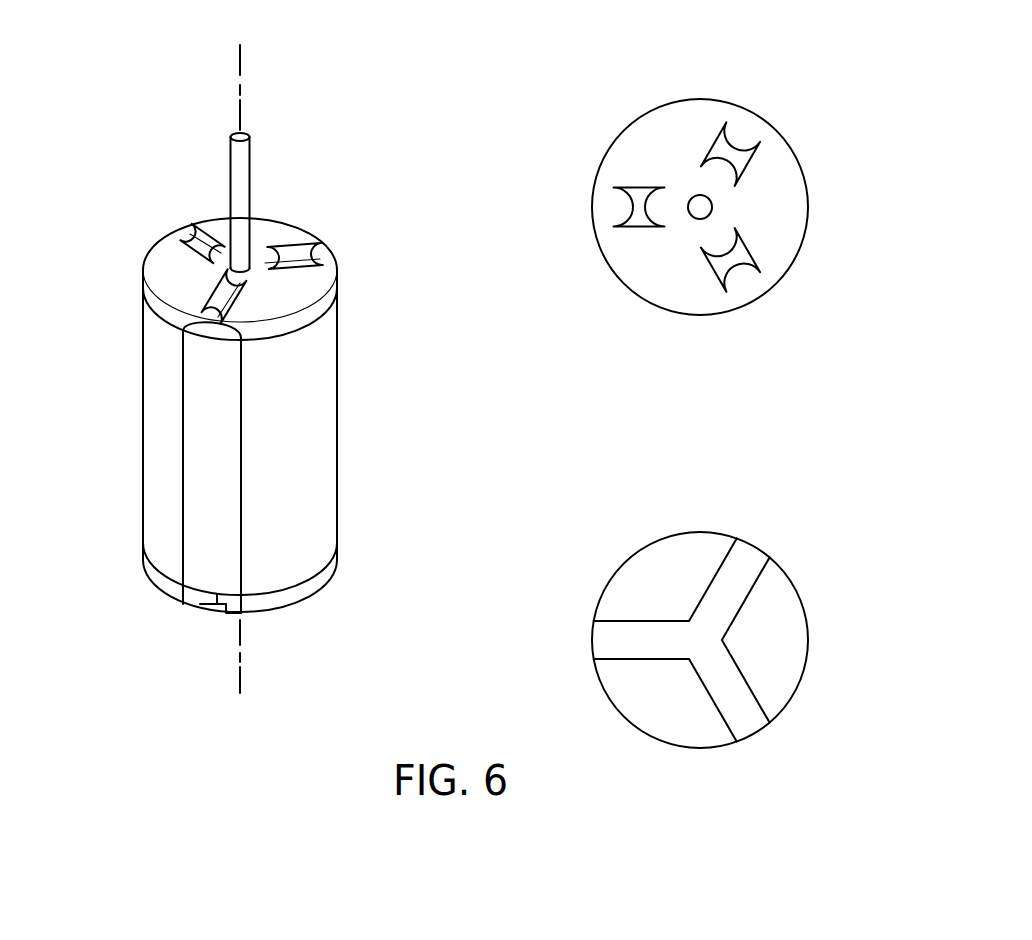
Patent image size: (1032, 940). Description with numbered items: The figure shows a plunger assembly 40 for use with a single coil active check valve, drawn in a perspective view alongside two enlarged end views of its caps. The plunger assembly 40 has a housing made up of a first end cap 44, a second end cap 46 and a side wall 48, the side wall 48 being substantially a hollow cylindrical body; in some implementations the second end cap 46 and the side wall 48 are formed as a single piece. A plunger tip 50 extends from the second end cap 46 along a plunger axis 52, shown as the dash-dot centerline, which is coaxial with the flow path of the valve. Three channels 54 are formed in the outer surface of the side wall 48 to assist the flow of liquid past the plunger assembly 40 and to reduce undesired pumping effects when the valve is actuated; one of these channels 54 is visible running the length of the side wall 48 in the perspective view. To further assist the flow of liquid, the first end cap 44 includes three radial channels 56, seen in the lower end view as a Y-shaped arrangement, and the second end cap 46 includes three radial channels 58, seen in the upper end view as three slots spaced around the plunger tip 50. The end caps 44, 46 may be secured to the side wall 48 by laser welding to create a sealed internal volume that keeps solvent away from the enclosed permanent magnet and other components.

The plunger assembly 40 is at (97, 410).
The first end cap 44 is at (308, 593).
The second end cap 46 is at (150, 263).
The side wall 48 is at (143, 461).
The plunger tip 50 is at (250, 158).
The plunger axis 52 is at (242, 76).
The channels 54 is at (217, 596).
The radial channels 56 is at (750, 559).
The radial channels 58 is at (186, 241).